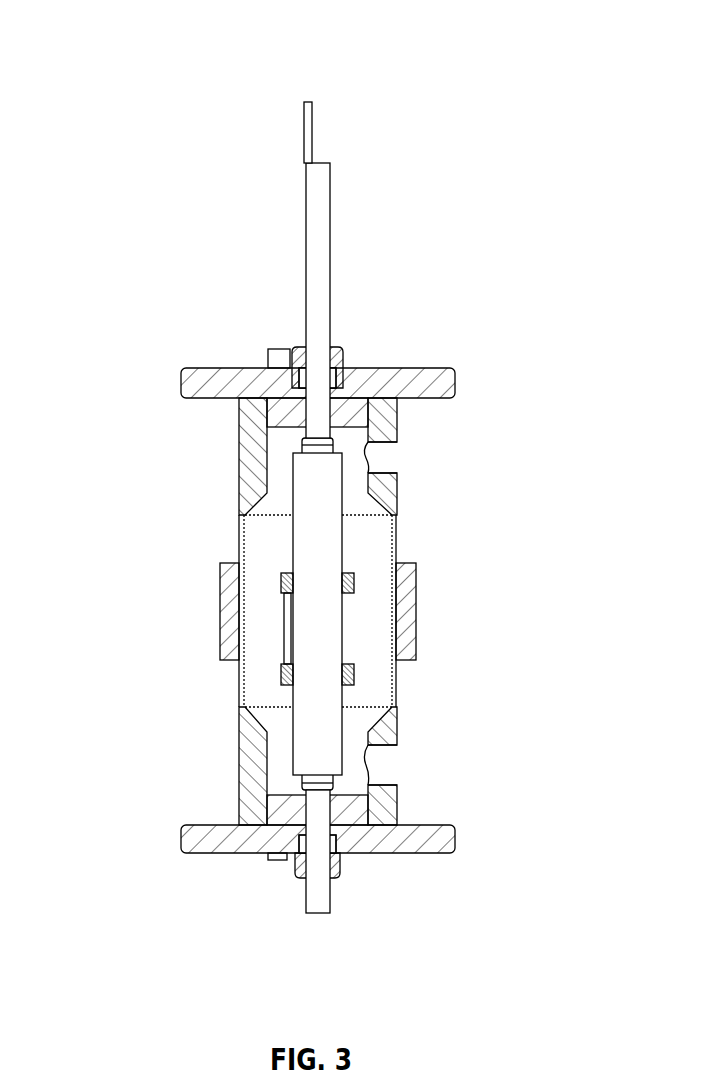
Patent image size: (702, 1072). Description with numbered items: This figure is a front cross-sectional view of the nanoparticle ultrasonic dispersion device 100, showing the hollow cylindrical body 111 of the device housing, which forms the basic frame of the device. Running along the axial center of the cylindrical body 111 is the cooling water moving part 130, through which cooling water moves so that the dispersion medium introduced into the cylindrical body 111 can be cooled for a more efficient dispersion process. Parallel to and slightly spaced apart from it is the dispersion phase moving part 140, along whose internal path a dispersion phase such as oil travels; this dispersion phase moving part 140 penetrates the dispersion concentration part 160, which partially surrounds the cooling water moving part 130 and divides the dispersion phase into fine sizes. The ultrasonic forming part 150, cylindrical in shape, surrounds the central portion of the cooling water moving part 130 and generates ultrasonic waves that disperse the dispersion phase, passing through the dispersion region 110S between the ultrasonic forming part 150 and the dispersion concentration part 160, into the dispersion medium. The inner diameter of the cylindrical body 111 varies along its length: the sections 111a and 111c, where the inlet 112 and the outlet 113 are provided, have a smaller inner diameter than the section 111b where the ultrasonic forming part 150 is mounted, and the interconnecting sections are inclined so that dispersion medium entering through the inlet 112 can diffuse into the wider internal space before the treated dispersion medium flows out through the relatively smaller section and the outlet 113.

The nanoparticle ultrasonic dispersion device 100 is at (338, 24).
The dispersion phase moving part 140 is at (306, 127).
The cylindrical body 111 is at (295, 604).
The section 111a is at (280, 757).
The section 111b is at (260, 672).
The section 111c is at (283, 444).
The inlet 112 is at (392, 760).
The outlet 113 is at (390, 452).
The cooling water moving part 130 is at (342, 533).
The ultrasonic forming part 150 is at (228, 612).
The dispersion concentration part 160 is at (283, 572).
The dispersion region 110S is at (366, 614).